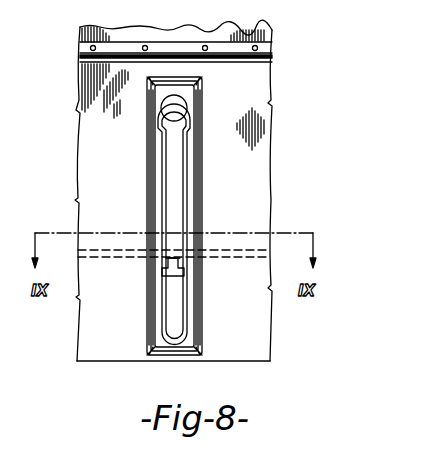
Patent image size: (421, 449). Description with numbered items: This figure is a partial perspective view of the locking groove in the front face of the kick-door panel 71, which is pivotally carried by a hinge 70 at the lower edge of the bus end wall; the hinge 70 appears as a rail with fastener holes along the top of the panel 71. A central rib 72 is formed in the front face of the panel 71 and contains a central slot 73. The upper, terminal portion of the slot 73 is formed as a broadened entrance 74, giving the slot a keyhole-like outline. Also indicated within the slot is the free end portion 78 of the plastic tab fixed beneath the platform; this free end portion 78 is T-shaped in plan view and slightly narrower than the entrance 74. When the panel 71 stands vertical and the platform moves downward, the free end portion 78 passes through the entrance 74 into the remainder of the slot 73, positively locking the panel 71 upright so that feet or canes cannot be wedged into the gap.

The hinge 70 is at (272, 58).
The kick-door panel 71 is at (238, 105).
The central rib 72 is at (193, 214).
The central slot 73 is at (170, 201).
The broadened entrance 74 is at (163, 121).
The free end portion 78 is at (172, 277).